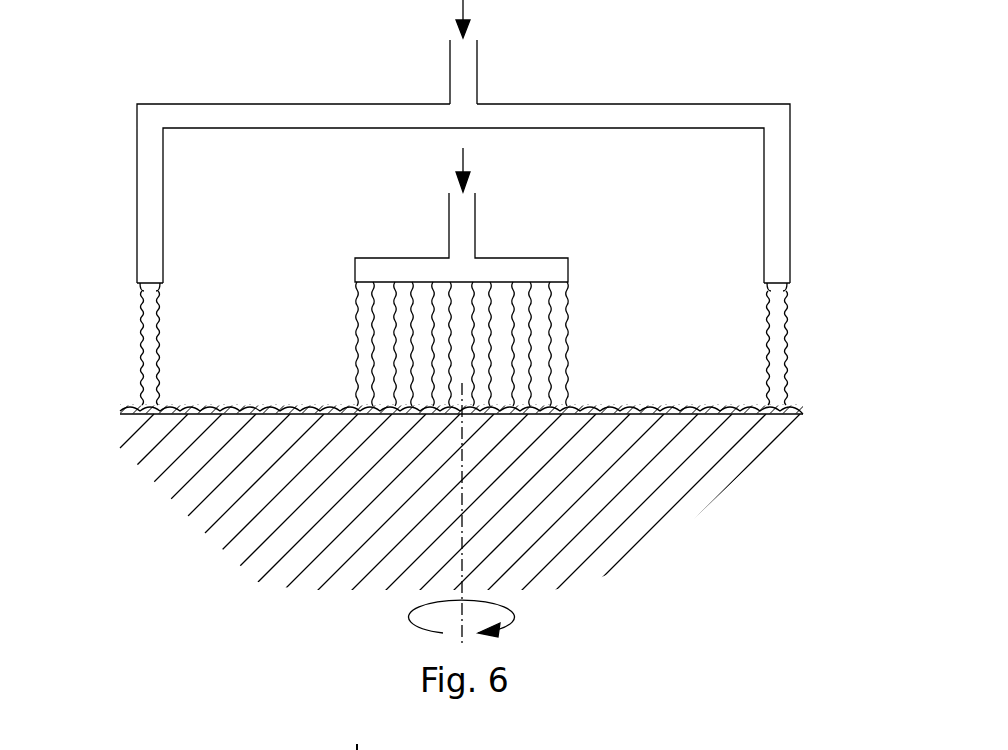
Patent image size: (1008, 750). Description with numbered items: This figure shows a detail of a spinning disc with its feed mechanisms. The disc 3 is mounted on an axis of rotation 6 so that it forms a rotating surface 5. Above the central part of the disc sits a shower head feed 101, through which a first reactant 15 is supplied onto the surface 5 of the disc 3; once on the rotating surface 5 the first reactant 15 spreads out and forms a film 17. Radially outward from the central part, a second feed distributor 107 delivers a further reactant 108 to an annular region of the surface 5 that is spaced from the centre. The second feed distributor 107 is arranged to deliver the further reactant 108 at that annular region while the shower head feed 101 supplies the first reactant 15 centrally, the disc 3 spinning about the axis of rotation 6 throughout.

The second feed distributor 107 is at (463, 75).
The shower head feed 101 is at (463, 233).
The first reactant 15 is at (565, 332).
The further reactant 108 is at (777, 330).
The film 17 is at (295, 405).
The rotating surface 5 is at (137, 416).
The disc 3 is at (633, 558).
The axis of rotation 6 is at (456, 620).